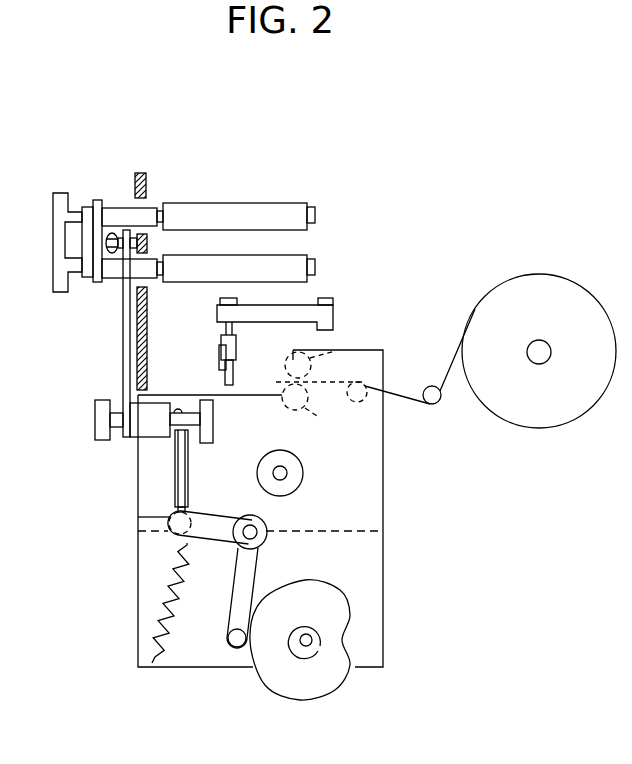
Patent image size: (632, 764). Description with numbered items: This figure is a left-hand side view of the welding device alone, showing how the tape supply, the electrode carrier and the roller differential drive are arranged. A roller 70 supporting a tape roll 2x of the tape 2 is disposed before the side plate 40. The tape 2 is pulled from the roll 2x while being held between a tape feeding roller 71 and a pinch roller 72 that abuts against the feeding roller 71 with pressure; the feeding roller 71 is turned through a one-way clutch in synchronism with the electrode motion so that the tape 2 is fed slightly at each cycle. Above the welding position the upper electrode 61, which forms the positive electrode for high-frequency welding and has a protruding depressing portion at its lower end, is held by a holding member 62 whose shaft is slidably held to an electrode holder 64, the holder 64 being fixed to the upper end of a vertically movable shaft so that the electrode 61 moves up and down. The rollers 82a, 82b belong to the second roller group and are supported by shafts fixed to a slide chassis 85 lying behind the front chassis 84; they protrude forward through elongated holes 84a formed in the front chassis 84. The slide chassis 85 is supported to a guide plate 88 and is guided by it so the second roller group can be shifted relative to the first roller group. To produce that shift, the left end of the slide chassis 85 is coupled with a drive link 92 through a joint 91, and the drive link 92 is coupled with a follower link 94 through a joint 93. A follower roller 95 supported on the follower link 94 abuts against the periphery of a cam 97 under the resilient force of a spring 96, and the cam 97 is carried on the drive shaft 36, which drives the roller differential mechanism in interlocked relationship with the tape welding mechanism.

The tape 2 is at (414, 404).
The tape roll 2x is at (476, 322).
The drive shaft 36 is at (307, 646).
The side plate 40 is at (368, 490).
The upper electrode 61 is at (225, 376).
The holding member 62 is at (237, 345).
The electrode holder 64 is at (290, 308).
The roller 70 is at (539, 362).
The tape feeding roller 71 is at (320, 418).
The pinch roller 72 is at (335, 352).
The roller 82a is at (285, 210).
The roller 82b is at (302, 250).
The front chassis 84 is at (140, 173).
The elongated holes 84a is at (140, 254).
The slide chassis 85 is at (98, 285).
The guide plate 88 is at (62, 261).
The joint 91 is at (110, 233).
The drive link 92 is at (123, 375).
The joint 93 is at (177, 462).
The follower link 94 is at (253, 570).
The follower roller 95 is at (236, 652).
The spring 96 is at (165, 590).
The cam 97 is at (296, 678).